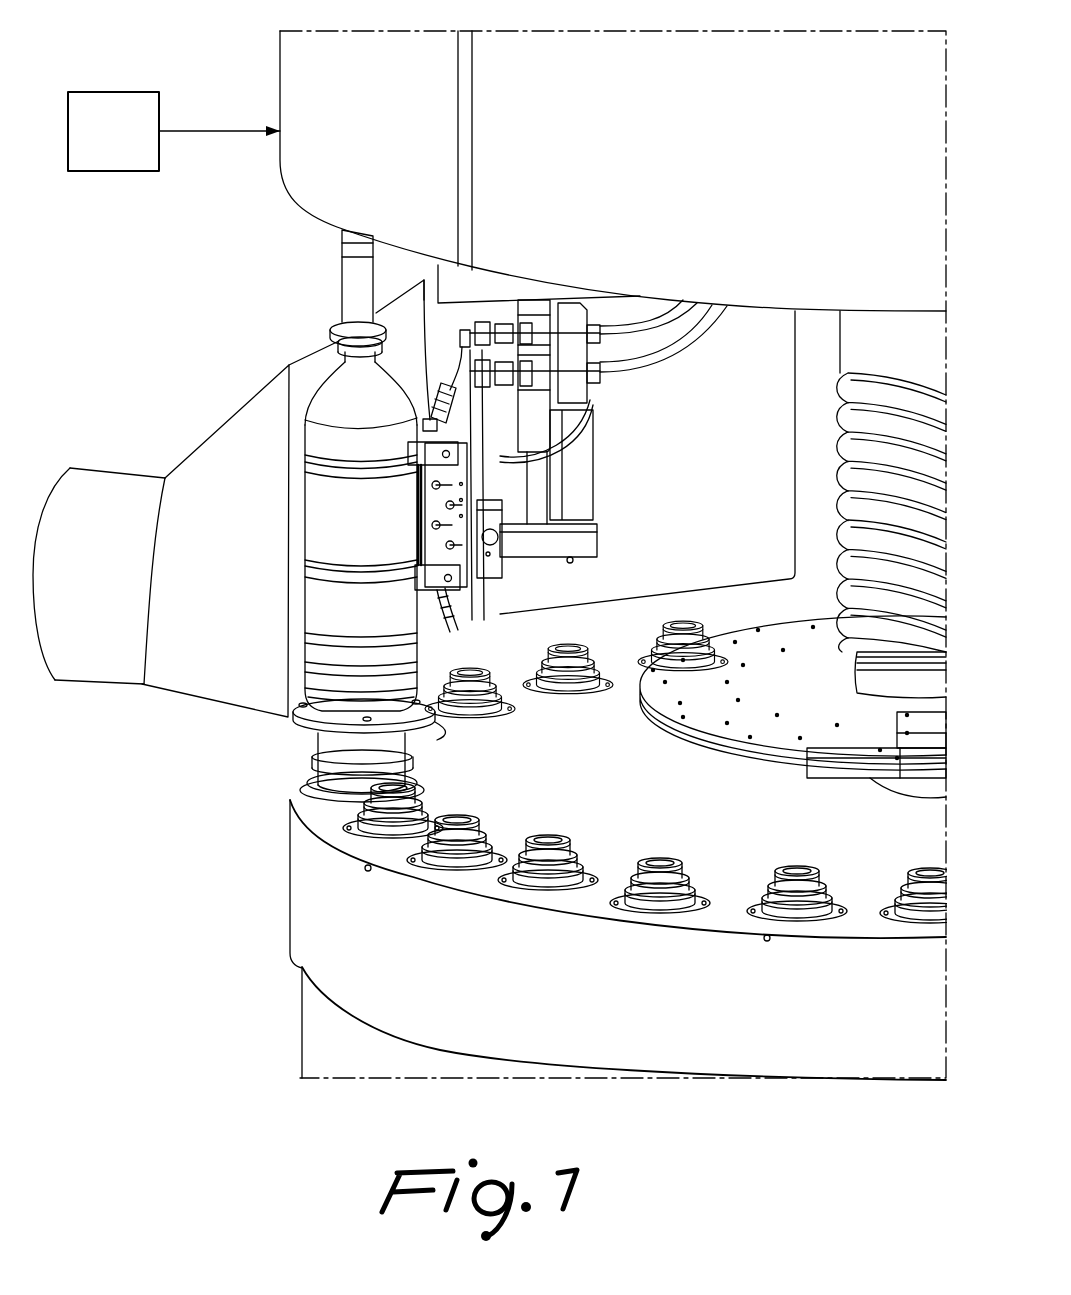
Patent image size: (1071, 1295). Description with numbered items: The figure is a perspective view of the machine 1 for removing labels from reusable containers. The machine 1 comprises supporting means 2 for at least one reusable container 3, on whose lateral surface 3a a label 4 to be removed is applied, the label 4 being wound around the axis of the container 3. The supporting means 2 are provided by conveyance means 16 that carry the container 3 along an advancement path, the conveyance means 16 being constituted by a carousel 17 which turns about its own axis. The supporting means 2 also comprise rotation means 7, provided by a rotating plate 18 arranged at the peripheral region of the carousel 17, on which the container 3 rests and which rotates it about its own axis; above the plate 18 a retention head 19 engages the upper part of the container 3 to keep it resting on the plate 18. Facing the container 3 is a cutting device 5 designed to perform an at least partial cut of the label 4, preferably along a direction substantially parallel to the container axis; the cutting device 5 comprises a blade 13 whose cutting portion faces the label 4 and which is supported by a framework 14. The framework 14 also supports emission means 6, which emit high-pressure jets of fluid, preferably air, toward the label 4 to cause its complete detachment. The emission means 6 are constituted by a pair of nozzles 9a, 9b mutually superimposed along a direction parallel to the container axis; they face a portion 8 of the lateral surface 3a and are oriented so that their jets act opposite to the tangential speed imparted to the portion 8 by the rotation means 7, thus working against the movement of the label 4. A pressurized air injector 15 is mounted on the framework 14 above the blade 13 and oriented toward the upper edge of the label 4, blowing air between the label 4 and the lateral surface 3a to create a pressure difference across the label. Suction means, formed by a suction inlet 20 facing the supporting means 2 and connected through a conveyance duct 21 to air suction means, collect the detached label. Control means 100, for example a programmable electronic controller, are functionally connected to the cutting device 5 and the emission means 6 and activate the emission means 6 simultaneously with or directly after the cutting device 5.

The control means 100 is at (114, 123).
The machine 1 is at (136, 330).
The supporting means 2 is at (285, 935).
The reusable container 3 is at (302, 600).
The lateral surface 3a is at (352, 424).
The label 4 is at (332, 535).
The cutting device 5 is at (490, 490).
The emission means 6 is at (419, 410).
The rotation means 7 is at (315, 767).
The portion of the lateral surface 8 is at (370, 478).
The nozzle 9a is at (422, 425).
The nozzle 9b is at (560, 560).
The blade 13 is at (420, 516).
The framework 14 is at (590, 508).
The pressurized air injector 15 is at (583, 393).
The conveyance means 16 is at (523, 813).
The carousel 17 is at (377, 850).
The rotating plate 18 is at (313, 722).
The retention head 19 is at (362, 292).
The suction inlet 20 is at (593, 476).
The conveyance duct 21 is at (92, 642).